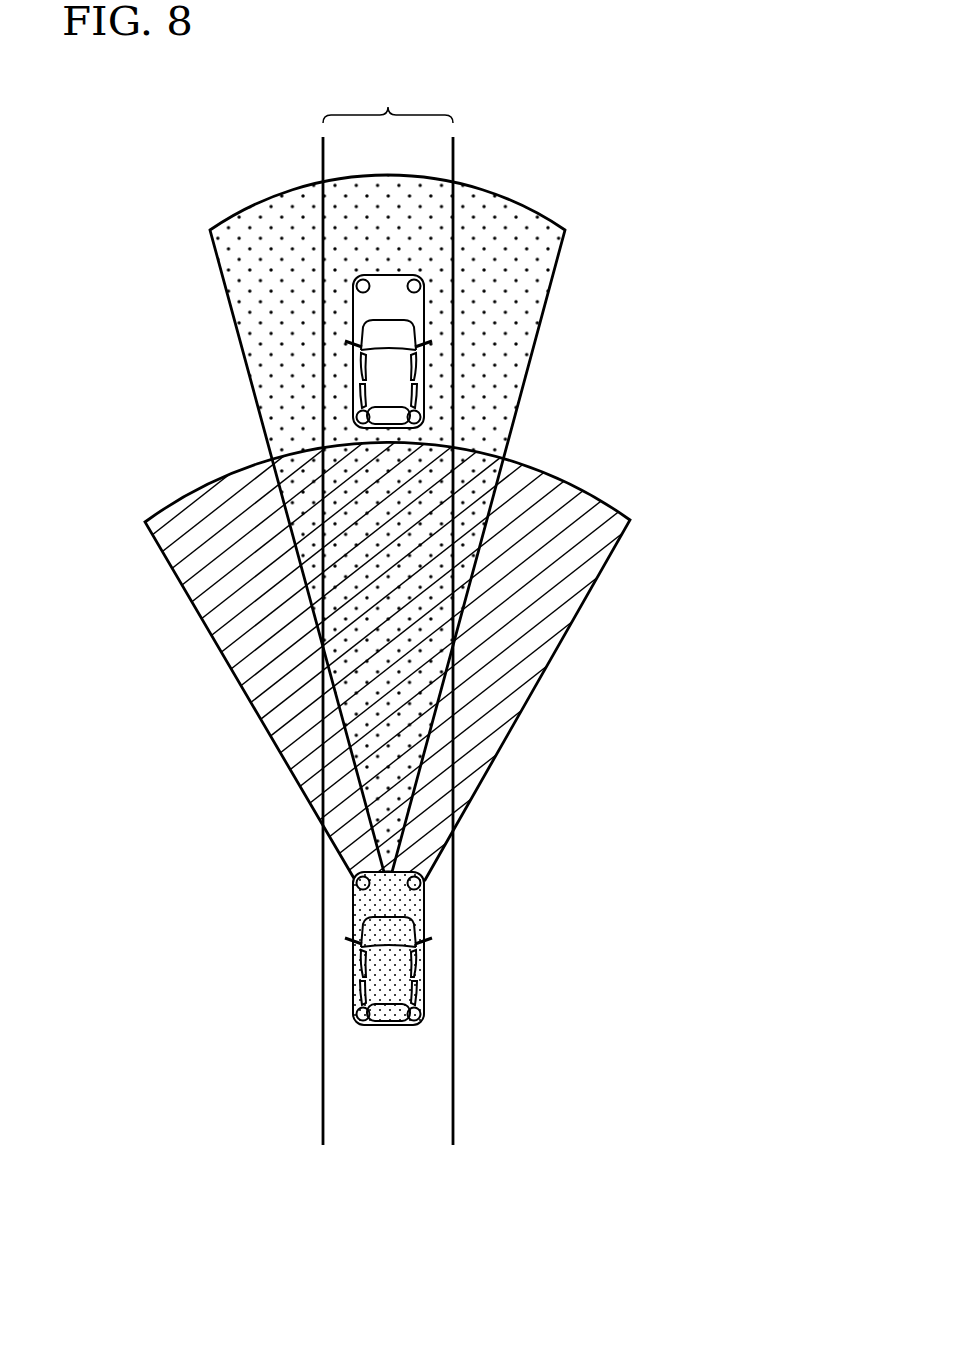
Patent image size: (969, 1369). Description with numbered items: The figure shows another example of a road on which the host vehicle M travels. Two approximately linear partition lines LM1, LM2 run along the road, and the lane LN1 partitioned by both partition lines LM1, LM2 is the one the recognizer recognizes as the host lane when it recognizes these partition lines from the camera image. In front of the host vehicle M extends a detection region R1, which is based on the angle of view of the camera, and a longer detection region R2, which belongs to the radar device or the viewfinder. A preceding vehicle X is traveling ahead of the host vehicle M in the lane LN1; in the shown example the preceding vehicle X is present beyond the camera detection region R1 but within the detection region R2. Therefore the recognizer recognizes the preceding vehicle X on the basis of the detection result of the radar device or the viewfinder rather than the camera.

The detection region of the camera R1 is at (215, 481).
The detection region of the radar device or viewfinder R2 is at (277, 196).
The partition line LM1 is at (323, 1125).
The partition line LM2 is at (453, 1125).
The lane LN1 is at (388, 99).
The preceding vehicle X is at (424, 357).
The host vehicle M is at (388, 1025).